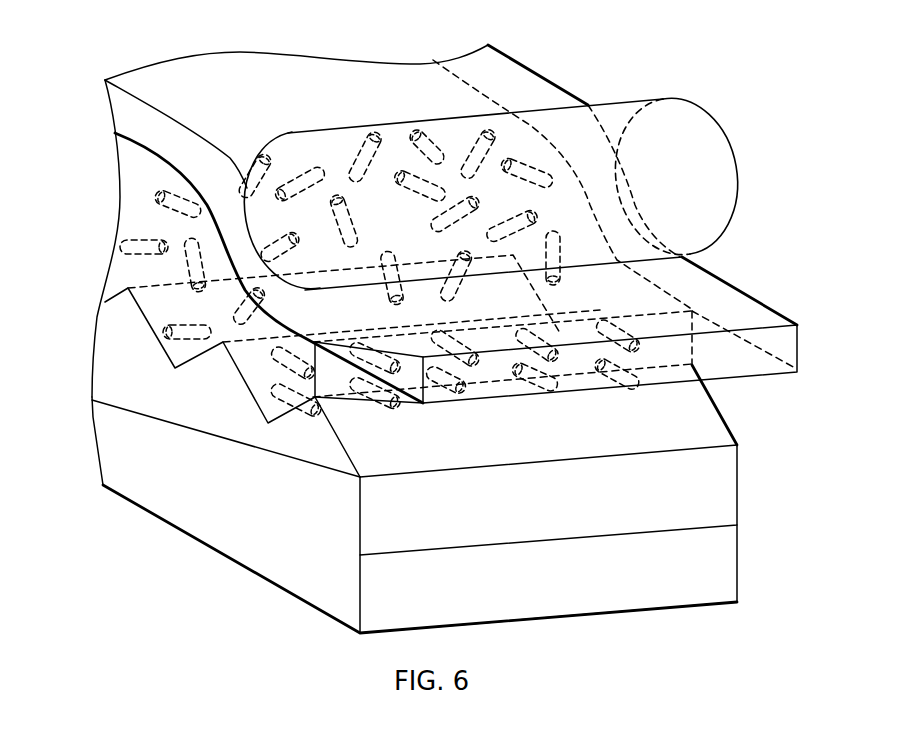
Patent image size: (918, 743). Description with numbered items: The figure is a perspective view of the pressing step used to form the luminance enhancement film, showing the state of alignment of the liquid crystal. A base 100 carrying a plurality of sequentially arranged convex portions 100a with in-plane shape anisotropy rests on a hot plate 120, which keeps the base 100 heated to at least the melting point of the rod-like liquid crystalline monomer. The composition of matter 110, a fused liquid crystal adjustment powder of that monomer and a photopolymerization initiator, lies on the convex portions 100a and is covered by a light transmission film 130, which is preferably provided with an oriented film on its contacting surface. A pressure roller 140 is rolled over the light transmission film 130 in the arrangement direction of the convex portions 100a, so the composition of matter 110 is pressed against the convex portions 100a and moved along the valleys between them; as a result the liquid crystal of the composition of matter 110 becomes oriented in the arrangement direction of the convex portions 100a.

The composition of matter 110 is at (130, 202).
The pressure roller 140 is at (720, 151).
The light transmission film 130 is at (793, 345).
The convex portion 100a is at (693, 412).
The base 100 is at (736, 482).
The hot plate 120 is at (736, 563).